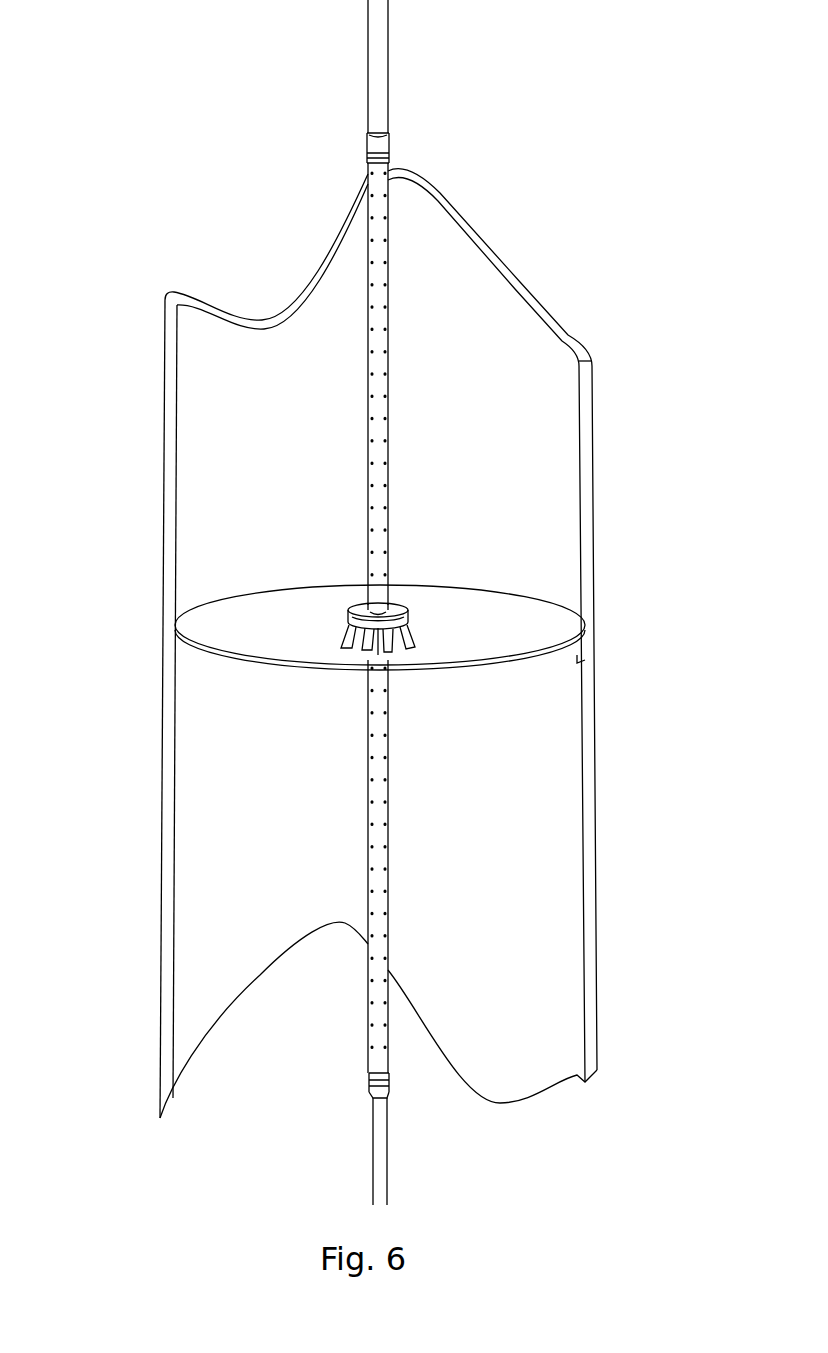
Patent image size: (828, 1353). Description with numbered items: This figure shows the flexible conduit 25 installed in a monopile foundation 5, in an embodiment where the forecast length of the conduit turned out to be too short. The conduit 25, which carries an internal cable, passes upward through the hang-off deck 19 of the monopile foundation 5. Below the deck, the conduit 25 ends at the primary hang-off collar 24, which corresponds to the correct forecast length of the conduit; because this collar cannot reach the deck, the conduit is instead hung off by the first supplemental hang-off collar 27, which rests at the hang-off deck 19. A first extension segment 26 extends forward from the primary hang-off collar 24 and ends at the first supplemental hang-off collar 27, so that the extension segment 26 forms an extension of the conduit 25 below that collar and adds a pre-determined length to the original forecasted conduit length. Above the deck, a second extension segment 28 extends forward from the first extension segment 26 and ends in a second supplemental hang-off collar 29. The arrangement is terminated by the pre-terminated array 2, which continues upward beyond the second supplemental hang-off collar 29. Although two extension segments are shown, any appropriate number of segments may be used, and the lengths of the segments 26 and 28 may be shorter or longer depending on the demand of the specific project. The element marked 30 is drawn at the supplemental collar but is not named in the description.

The pre-terminated array 2 is at (368, 77).
The monopile foundation 5 is at (520, 280).
The hang-off deck 19 is at (503, 612).
The primary hang-off collar 24 is at (370, 1075).
The flexible conduit 25 is at (373, 1148).
The first extension segment 26 is at (368, 830).
The first supplemental hang-off collar 27 is at (375, 613).
The second extension segment 28 is at (368, 237).
The second supplemental hang-off collar 29 is at (367, 152).
The support legs 30 is at (355, 643).